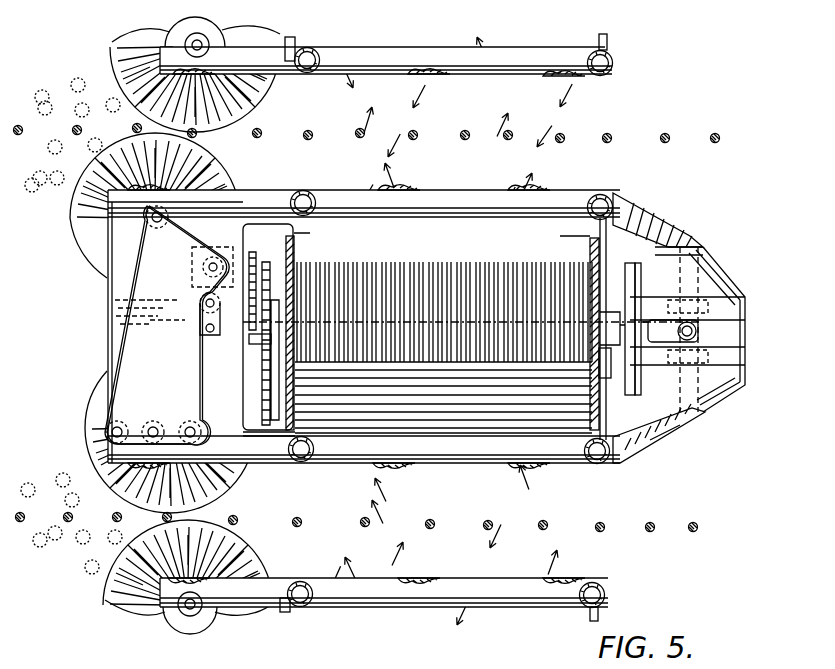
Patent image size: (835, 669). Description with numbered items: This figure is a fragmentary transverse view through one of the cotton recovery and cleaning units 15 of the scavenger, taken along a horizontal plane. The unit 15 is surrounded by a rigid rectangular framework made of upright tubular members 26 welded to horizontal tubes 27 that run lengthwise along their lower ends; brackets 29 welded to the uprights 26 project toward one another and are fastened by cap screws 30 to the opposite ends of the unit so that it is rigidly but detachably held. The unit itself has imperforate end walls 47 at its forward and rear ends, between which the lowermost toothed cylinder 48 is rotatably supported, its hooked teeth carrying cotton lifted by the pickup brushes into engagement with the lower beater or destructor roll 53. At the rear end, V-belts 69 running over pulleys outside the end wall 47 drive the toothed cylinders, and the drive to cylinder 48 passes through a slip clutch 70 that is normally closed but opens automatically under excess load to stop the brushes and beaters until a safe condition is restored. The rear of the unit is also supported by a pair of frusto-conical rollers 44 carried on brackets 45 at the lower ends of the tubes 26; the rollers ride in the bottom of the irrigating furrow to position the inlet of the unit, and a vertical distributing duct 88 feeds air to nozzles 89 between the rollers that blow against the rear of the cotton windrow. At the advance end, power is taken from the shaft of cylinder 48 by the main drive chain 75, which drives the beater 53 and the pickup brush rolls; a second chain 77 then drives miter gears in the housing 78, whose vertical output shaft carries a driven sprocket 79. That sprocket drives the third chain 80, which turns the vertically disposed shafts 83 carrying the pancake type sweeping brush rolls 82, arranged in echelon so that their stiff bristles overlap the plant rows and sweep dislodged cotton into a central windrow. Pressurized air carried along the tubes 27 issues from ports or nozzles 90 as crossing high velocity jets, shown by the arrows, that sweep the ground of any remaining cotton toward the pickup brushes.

The cotton recovery and cleaning unit 15 is at (605, 277).
The upright tubular members 26 is at (312, 50).
The tubes 27 is at (503, 58).
The brackets 29 is at (294, 233).
The cap screws 30 is at (268, 326).
The frusto-conical rollers 44 is at (715, 272).
The brackets 45 is at (648, 212).
The end walls 47 is at (294, 253).
The toothed cylinder 48 is at (450, 262).
The beater roll 53 is at (285, 438).
The V-belts 69 is at (637, 290).
The slip clutch 70 is at (615, 360).
The main drive chain 75 is at (268, 378).
The drive chain 77 is at (250, 336).
The housing 78 is at (192, 280).
The driven sprocket 79 is at (205, 262).
The third chain 80 is at (125, 327).
The sweeping brush rolls 82 is at (118, 42).
The vertically disposed shafts 83 is at (198, 44).
The vertical distributing duct 88 is at (700, 330).
The nozzles 89 is at (655, 325).
The ports or nozzles 90 is at (192, 78).